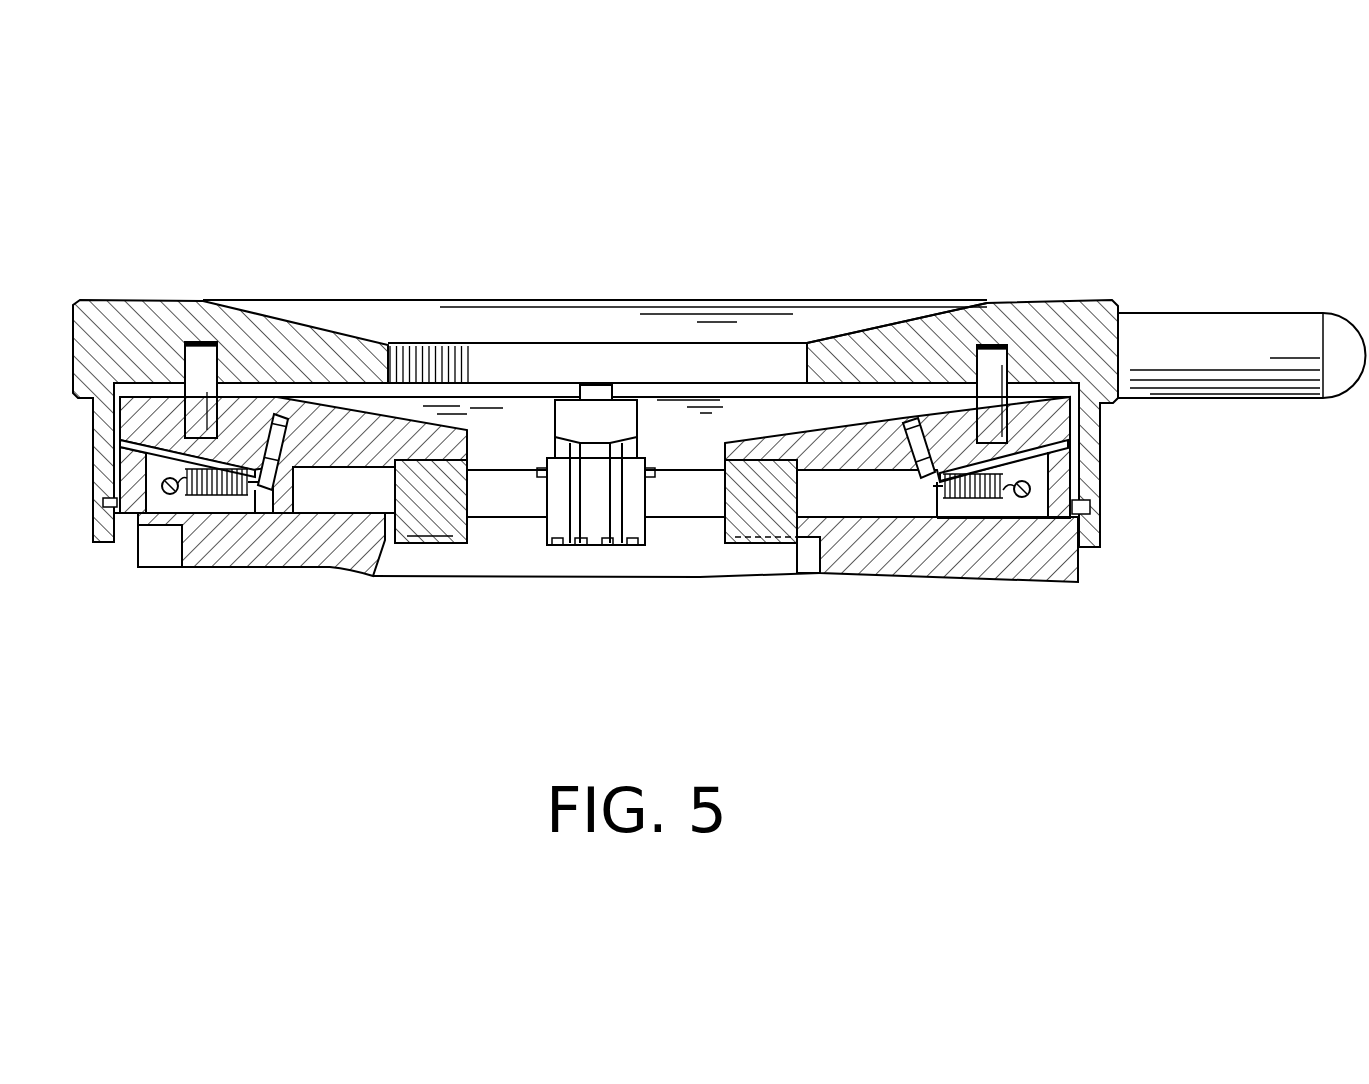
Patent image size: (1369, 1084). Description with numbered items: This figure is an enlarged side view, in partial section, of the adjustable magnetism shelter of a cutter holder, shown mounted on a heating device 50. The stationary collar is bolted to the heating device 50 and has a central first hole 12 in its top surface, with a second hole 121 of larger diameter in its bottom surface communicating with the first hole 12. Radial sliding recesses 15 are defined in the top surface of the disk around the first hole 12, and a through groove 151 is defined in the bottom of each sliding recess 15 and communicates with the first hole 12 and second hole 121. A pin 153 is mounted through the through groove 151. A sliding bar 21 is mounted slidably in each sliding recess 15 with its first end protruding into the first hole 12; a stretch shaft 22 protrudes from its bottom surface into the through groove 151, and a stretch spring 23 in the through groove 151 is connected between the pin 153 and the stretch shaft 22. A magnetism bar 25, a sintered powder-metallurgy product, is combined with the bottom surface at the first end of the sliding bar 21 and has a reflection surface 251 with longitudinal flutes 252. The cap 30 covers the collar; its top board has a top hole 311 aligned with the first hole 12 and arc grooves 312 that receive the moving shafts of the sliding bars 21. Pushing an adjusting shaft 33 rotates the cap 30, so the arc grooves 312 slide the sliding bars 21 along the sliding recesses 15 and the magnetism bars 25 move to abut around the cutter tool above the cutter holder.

The cap 30 is at (1100, 215).
The adjusting shaft 33 is at (1188, 327).
The top hole 311 is at (803, 353).
The arc groove 312 is at (1007, 357).
The first hole 12 is at (515, 445).
The sliding bar 21 is at (852, 424).
The sliding recess 15 is at (1060, 444).
The through groove 151 is at (1046, 471).
The stretch spring 23 is at (977, 497).
The pin 153 is at (1027, 500).
The stretch shaft 22 is at (278, 444).
The second hole 121 is at (264, 508).
The magnetism bar 25 is at (551, 524).
The flute 252 is at (606, 548).
The reflection surface 251 is at (765, 560).
The heating device 50 is at (1078, 570).